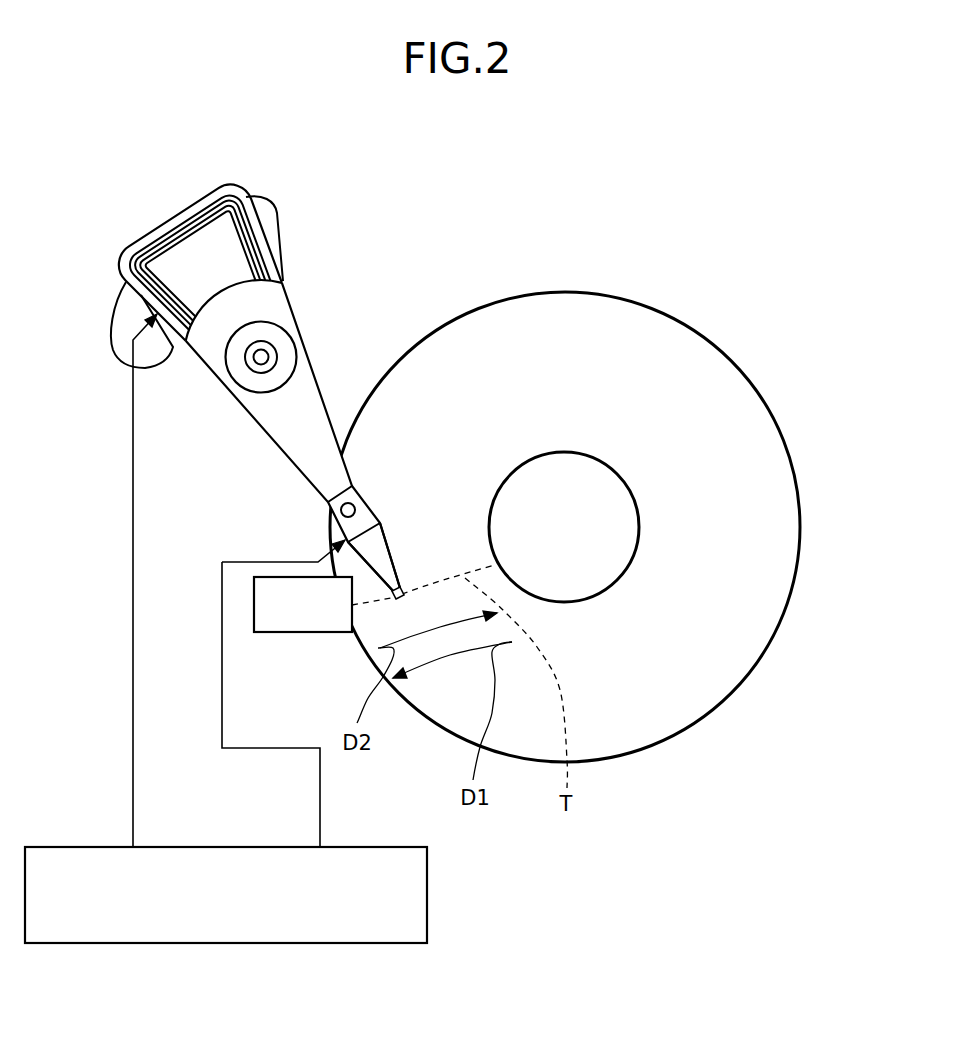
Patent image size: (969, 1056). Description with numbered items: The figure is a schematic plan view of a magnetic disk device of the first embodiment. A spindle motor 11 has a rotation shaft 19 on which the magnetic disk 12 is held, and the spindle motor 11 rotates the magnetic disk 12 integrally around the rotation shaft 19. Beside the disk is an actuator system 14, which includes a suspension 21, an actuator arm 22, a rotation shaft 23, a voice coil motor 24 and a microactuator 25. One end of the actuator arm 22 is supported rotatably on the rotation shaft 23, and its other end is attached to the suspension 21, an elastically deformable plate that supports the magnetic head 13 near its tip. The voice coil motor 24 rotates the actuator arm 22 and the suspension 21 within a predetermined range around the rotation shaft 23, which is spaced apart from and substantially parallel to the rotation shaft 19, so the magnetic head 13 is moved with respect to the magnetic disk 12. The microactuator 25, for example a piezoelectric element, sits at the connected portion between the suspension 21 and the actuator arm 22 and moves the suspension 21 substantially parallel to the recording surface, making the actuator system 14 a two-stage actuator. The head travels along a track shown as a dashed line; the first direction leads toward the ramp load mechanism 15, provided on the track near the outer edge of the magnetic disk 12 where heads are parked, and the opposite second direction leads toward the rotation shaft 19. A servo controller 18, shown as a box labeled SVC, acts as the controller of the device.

The spindle motor 11 is at (610, 530).
The magnetic disk 12 is at (562, 292).
The magnetic head 13 is at (400, 597).
The actuator system 14 is at (210, 251).
The ramp load mechanism 15 is at (300, 632).
The servo controller 18 is at (226, 943).
The rotation shaft 19 is at (698, 527).
The suspension 21 is at (397, 560).
The actuator arm 22 is at (526, 437).
The rotation shaft 23 is at (263, 393).
The voice coil motor 24 is at (218, 186).
The microactuator 25 is at (380, 522).